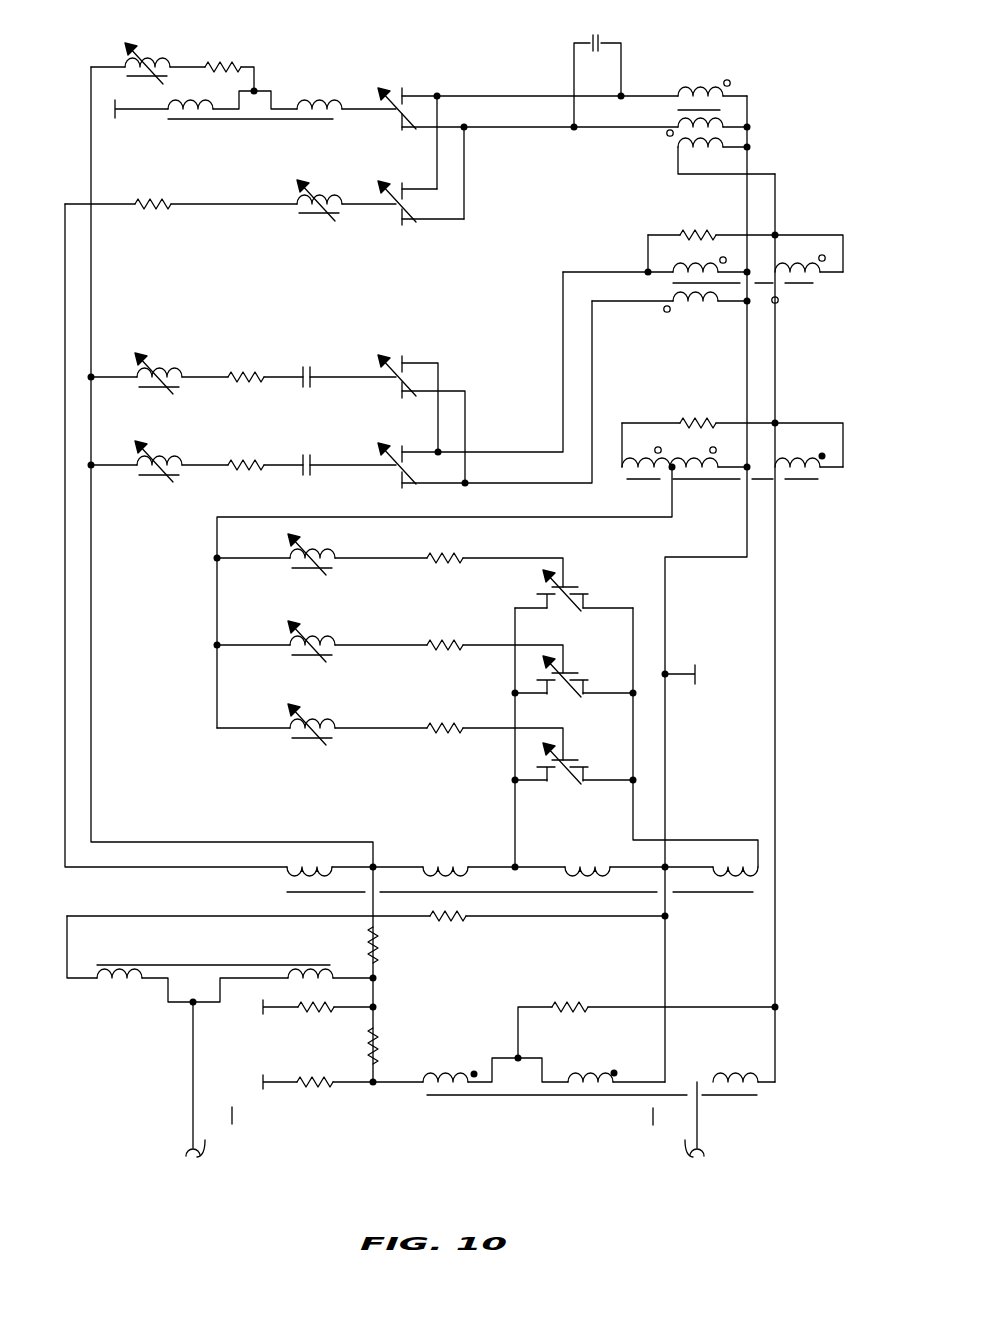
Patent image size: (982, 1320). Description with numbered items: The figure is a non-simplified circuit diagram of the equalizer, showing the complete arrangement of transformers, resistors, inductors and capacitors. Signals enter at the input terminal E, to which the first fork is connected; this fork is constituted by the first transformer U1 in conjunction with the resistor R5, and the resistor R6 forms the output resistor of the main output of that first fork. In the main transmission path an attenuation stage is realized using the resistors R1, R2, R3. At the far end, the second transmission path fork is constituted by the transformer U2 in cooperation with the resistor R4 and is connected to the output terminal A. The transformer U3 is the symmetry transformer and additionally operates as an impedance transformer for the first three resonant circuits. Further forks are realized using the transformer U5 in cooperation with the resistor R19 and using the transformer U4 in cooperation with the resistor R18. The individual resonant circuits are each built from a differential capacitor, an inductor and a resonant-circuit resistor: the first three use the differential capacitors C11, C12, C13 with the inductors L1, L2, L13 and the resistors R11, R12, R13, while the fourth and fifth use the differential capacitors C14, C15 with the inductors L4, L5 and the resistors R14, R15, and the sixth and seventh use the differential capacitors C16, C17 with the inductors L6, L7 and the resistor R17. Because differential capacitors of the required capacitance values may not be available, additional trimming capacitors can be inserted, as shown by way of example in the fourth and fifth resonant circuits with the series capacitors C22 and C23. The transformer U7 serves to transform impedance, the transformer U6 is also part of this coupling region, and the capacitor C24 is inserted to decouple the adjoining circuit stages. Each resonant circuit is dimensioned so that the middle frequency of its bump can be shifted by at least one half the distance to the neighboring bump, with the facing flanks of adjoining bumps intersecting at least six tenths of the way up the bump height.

The inductor L7 is at (130, 58).
The resonant-circuit resistor R17 is at (212, 63).
The transformer U7 is at (255, 115).
The differential capacitor C17 is at (519, 153).
The inductor L6 is at (230, 197).
The differential capacitor C16 is at (411, 216).
The capacitor C24 is at (573, 81).
The transformer U6 is at (710, 127).
The resistor R19 is at (745, 241).
The transformer U5 is at (640, 369).
The resistor R18 is at (732, 432).
The transformer U4 is at (530, 587).
The inductor L5 is at (135, 370).
The resonant-circuit resistor R15 is at (242, 364).
The series capacitor C23 is at (349, 366).
The differential capacitor C15 is at (415, 421).
The inductor L4 is at (135, 458).
The resonant-circuit resistor R14 is at (242, 452).
The series capacitor C22 is at (349, 454).
The differential capacitor C14 is at (410, 473).
The inductor L13 is at (275, 550).
The resonant-circuit resistor R13 is at (449, 559).
The differential capacitor C13 is at (574, 589).
The inductor L2 is at (275, 637).
The resonant-circuit resistor R12 is at (449, 646).
The differential capacitor C12 is at (574, 675).
The inductor L1 is at (276, 720).
The resonant-circuit resistor R11 is at (449, 731).
The differential capacitor C11 is at (574, 762).
The transformer U3 is at (522, 868).
The resistor R6 is at (368, 926).
The resistor R5 is at (387, 954).
The first transformer U1 is at (235, 1056).
The resistor R2 is at (320, 1017).
The resistor R3 is at (388, 1057).
The resistor R1 is at (343, 1092).
The transformer U2 is at (599, 1102).
The resistor R4 is at (648, 1021).
The input terminal E is at (209, 1141).
The output terminal A is at (678, 1142).